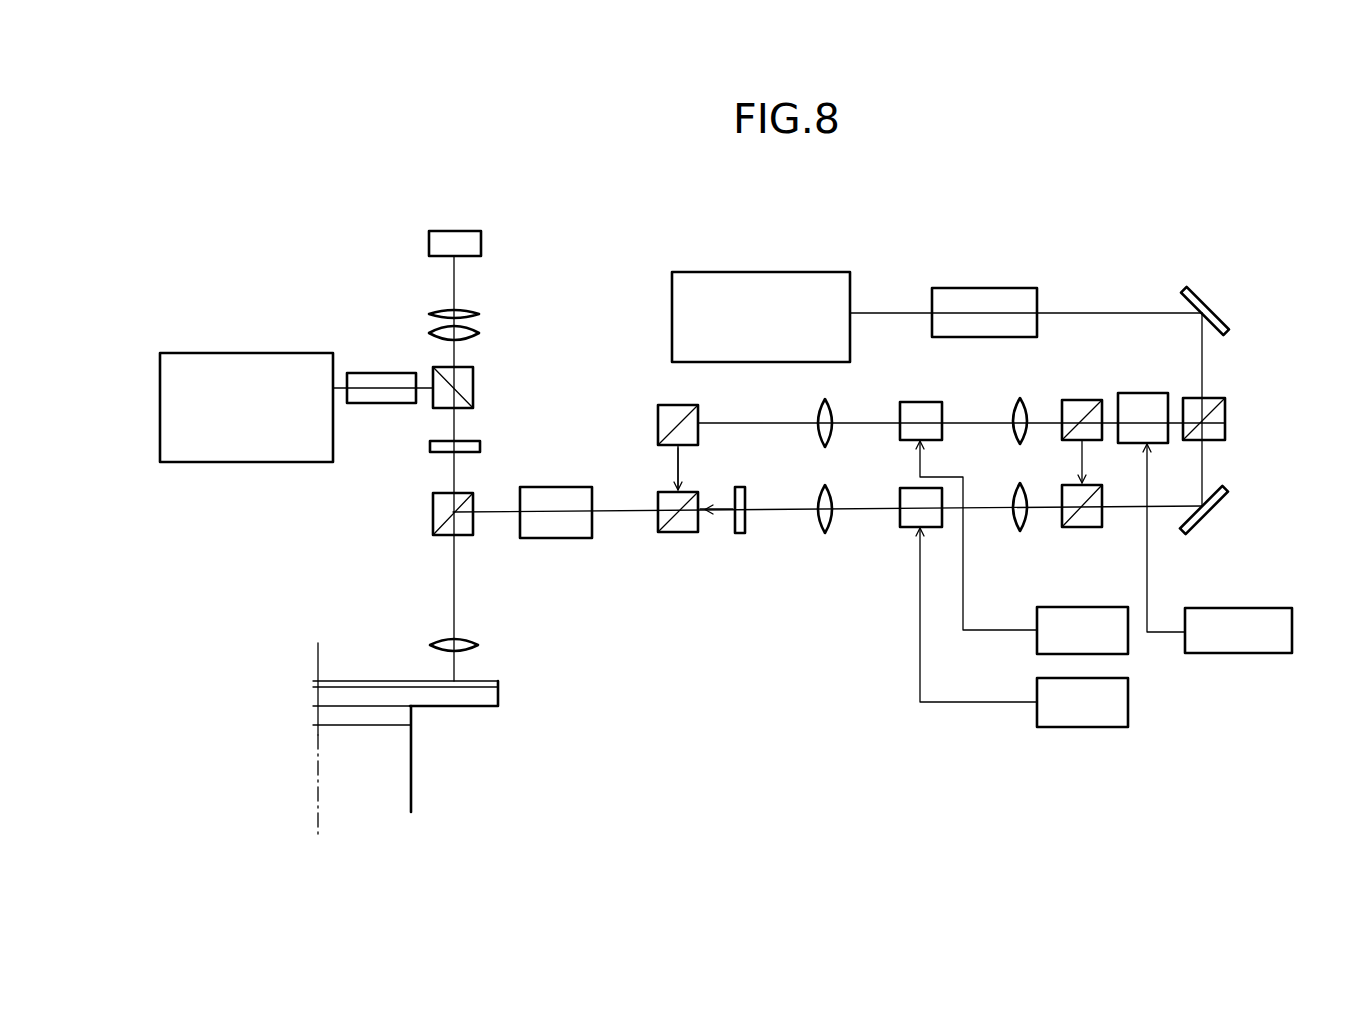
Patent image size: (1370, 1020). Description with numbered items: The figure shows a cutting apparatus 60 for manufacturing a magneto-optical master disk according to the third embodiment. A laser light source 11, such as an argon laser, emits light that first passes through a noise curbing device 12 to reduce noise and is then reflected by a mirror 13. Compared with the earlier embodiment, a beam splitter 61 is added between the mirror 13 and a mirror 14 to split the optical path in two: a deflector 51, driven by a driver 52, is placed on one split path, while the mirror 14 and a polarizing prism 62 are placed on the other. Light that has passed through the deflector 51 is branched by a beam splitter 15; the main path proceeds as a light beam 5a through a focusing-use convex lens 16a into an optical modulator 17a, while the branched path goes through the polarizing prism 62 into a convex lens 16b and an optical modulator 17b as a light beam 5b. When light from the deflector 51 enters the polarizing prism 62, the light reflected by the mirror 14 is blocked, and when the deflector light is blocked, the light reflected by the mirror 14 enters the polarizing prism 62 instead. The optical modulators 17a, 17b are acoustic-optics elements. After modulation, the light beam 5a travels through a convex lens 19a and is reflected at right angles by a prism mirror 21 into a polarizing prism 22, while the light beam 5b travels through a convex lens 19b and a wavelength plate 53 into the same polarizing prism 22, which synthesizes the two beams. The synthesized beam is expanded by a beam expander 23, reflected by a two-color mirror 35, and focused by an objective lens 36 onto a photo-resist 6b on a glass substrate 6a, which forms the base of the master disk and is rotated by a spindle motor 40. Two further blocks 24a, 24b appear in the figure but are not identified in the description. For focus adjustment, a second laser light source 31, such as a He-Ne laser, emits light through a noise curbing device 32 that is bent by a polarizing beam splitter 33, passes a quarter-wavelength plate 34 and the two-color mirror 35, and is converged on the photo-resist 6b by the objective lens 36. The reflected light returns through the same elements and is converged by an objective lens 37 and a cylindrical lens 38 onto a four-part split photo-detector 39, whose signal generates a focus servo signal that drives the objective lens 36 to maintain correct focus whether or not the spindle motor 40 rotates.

The light beam 5a is at (676, 458).
The light beam 5b is at (723, 512).
The glass substrate 6a is at (498, 700).
The photo-resist 6b is at (500, 681).
The laser light source 11 is at (750, 272).
The noise curbing device 12 is at (968, 288).
The mirror 13 is at (1205, 300).
The mirror 14 is at (1215, 508).
The beam splitter 15 is at (1075, 400).
The convex lens 16a is at (1028, 412).
The convex lens 16b is at (1018, 533).
The optical modulator 17a is at (912, 400).
The optical modulator 17b is at (898, 520).
The convex lens 19a is at (832, 408).
The convex lens 19b is at (832, 496).
The prism mirror 21 is at (667, 405).
The polarizing prism 22 is at (658, 525).
The beam expander 23 is at (568, 487).
The deflector driver 24a is at (1068, 607).
The deflector driver 24b is at (1130, 704).
The laser light source 31 is at (250, 353).
The noise curbing device 32 is at (360, 373).
The polarizing beam splitter 33 is at (475, 385).
The ¼-wavelength plate 34 is at (470, 440).
The 2-color mirror 35 is at (433, 513).
The objective lens 36 is at (478, 646).
The objective lens 37 is at (480, 334).
The cylindrical lens 38 is at (482, 312).
The 4-part split photo-detector 39 is at (483, 243).
The spindle motor 40 is at (412, 782).
The deflector 51 is at (1138, 393).
The driver 52 is at (1294, 618).
The wavelength plate 53 is at (740, 535).
The cutting apparatus 60 is at (1160, 220).
The beam splitter 61 is at (1227, 430).
The polarizing prism 62 is at (1062, 487).